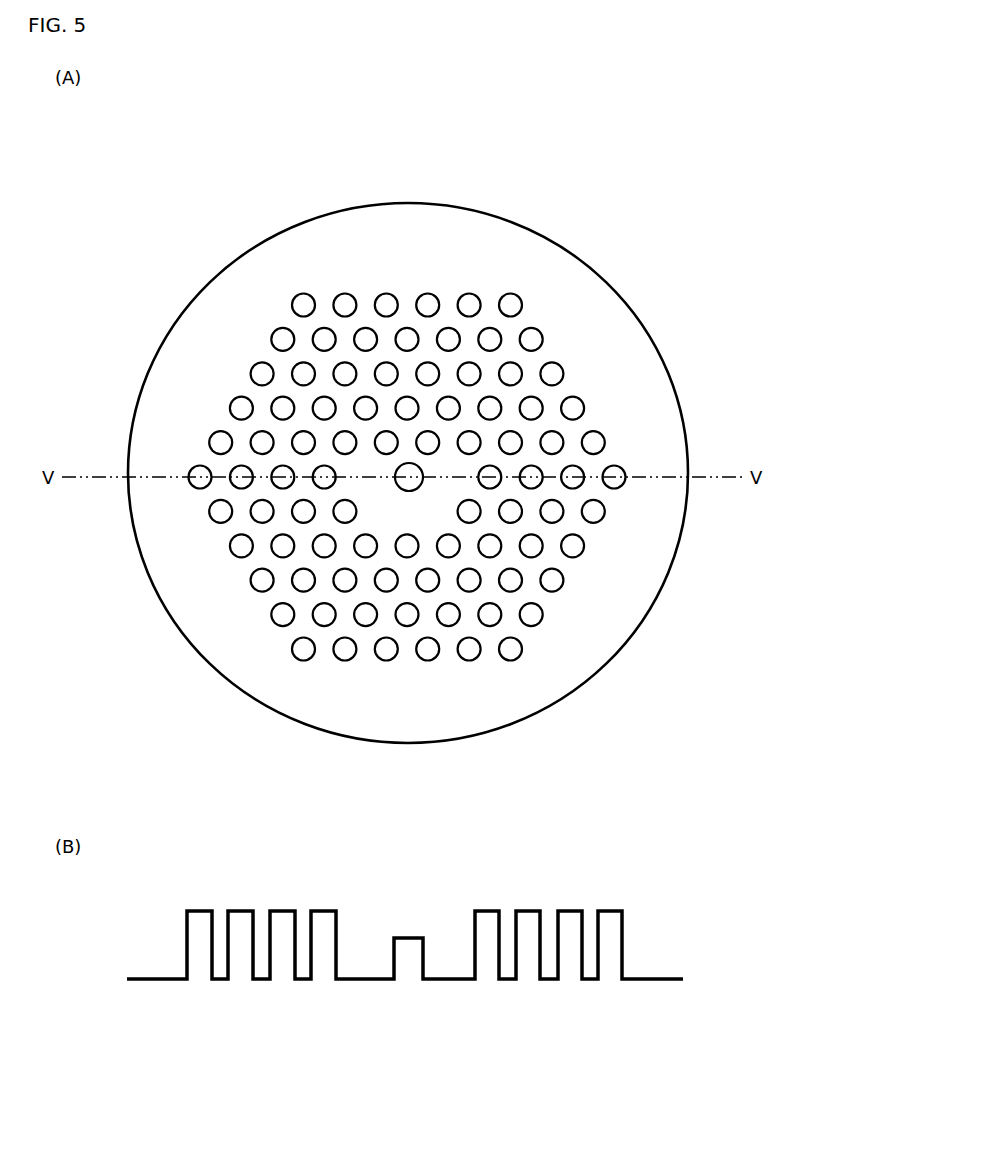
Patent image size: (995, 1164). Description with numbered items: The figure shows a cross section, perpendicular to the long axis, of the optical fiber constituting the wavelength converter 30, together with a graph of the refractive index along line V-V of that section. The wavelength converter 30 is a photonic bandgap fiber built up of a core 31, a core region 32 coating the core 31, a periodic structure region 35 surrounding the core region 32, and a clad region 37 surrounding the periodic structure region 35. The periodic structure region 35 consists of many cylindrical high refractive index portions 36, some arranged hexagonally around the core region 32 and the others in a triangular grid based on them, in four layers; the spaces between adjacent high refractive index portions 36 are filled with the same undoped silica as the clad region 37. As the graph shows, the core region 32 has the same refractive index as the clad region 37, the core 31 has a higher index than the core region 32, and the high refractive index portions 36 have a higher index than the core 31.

The wavelength converter 30 is at (628, 152).
The core 31 is at (412, 476).
The core region 32 is at (425, 506).
The periodic structure region 35 is at (532, 313).
The high refractive index portion 36 is at (592, 440).
The clad region 37 is at (642, 573).